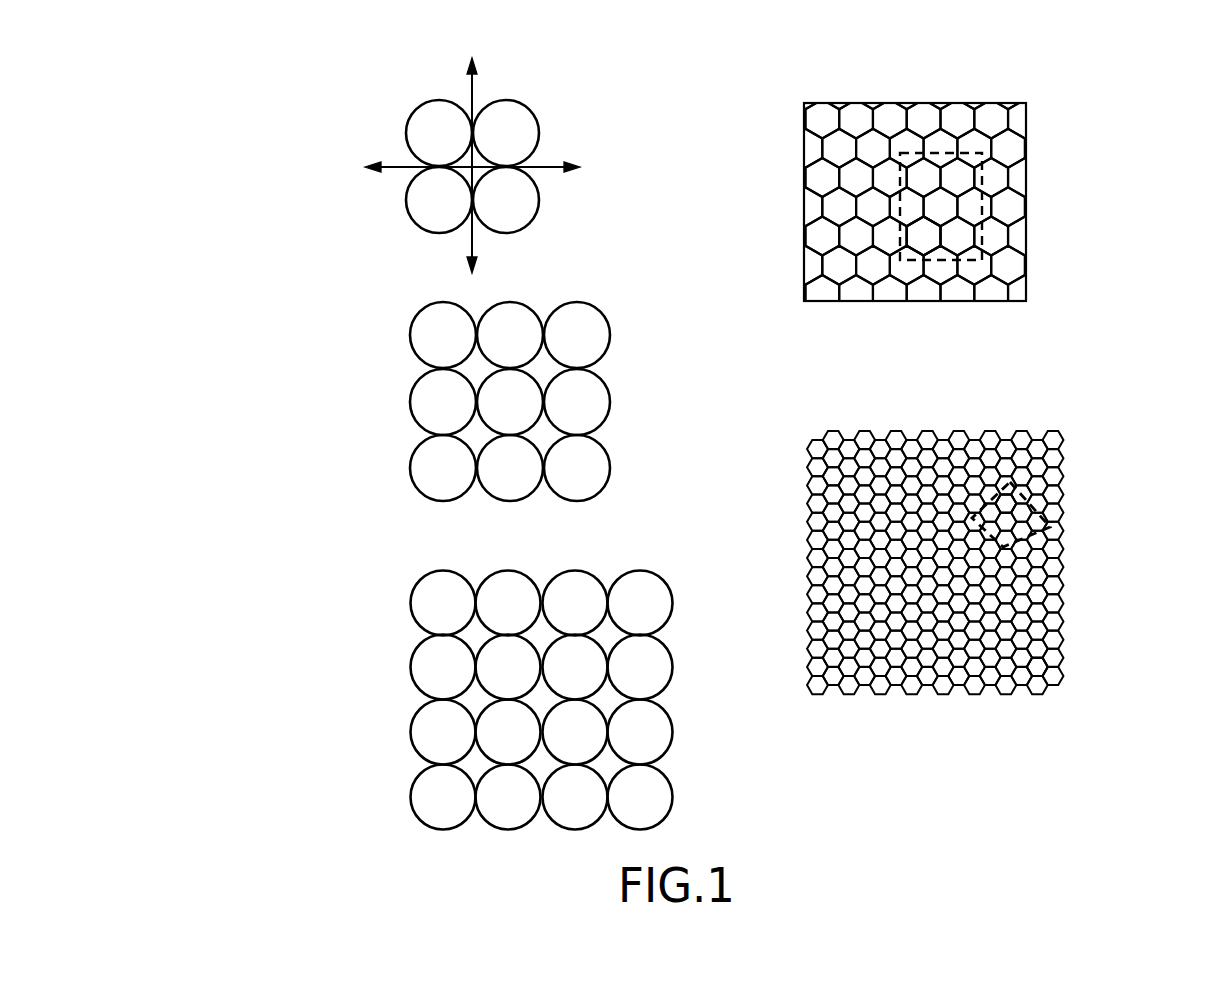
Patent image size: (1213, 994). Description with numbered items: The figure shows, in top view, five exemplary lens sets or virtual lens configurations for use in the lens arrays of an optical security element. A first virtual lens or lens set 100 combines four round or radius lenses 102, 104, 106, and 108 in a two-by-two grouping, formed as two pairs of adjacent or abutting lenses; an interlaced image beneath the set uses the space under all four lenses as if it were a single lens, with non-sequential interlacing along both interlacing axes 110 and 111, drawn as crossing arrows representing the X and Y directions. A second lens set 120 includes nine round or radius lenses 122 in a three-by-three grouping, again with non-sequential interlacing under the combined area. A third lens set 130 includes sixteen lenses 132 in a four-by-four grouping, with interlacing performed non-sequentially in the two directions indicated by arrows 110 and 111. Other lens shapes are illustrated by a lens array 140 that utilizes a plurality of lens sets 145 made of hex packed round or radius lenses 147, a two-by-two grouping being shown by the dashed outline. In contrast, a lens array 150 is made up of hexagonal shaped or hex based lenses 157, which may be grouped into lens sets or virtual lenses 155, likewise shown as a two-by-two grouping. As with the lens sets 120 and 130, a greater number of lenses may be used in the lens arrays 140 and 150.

The lens set 100 is at (348, 174).
The round lens 102 is at (424, 228).
The round lens 104 is at (522, 228).
The round lens 106 is at (537, 143).
The round lens 108 is at (441, 103).
The interlacing axis 110 is at (542, 168).
The interlacing axis 111 is at (470, 108).
The lens set 120 is at (386, 428).
The round lenses 122 is at (492, 497).
The lens set 130 is at (386, 700).
The lenses 132 is at (493, 818).
The lens array 140 is at (1097, 197).
The lens set 145 is at (982, 233).
The hex packed round lens 147 is at (928, 252).
The lens array 150 is at (1090, 565).
The virtual lens 155 is at (1050, 527).
The hex based lens 157 is at (1010, 495).